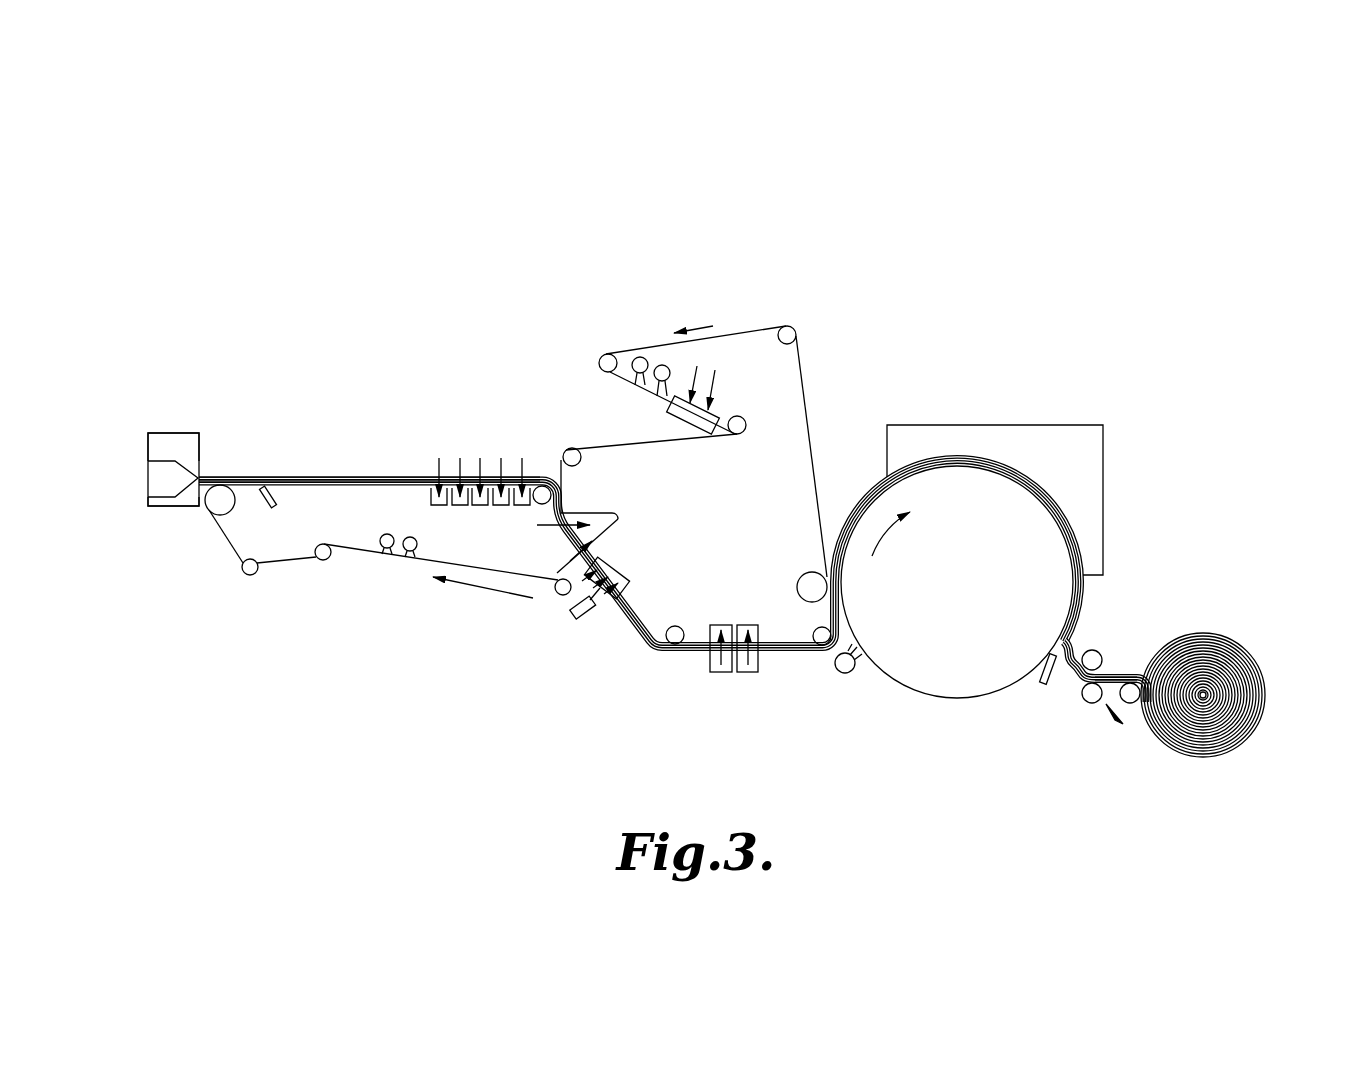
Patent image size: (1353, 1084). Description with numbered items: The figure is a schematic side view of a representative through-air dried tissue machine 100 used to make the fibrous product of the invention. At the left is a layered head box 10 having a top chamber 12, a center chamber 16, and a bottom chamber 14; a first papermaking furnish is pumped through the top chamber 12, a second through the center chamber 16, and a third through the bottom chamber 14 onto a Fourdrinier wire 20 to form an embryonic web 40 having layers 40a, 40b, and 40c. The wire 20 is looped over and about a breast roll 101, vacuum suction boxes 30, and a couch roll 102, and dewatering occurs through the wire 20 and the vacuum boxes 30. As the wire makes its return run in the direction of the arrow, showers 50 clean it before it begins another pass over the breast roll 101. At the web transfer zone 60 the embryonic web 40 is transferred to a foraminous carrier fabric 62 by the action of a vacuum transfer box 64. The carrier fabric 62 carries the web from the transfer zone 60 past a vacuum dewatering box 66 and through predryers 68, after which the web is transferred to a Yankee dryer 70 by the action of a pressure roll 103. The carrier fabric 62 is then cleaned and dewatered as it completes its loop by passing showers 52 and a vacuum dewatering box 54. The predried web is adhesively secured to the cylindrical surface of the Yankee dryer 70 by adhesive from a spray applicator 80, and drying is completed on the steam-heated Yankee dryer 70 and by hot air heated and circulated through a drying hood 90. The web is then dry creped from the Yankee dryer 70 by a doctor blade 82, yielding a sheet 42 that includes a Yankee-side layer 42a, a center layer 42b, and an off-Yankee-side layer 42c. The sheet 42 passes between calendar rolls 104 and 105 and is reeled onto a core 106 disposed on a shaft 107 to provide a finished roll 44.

The layered head box 10 is at (148, 445).
The top chamber 12 is at (165, 443).
The bottom chamber 14 is at (185, 504).
The center chamber 16 is at (148, 486).
The Fourdrinier wire 20 is at (291, 566).
The vacuum suction boxes 30 is at (483, 513).
The embryonic web 40 is at (241, 468).
The layer 40a is at (288, 482).
The layer 40b is at (339, 482).
The layer 40c is at (383, 479).
The sheet 42 is at (1120, 667).
The Yankee-side layer 42a is at (1112, 684).
The center layer 42b is at (1122, 706).
The off-Yankee-side layer 42c is at (1147, 669).
The roll 44 is at (1264, 700).
The showers 50 is at (386, 524).
The showers 52 is at (655, 356).
The vacuum dewatering box 54 is at (713, 362).
The web transfer zone 60 is at (564, 552).
The foraminous carrier fabric 62 is at (807, 394).
The vacuum transfer box 64 is at (618, 519).
The vacuum dewatering box 66 is at (623, 566).
The predryers 68 is at (741, 688).
The Yankee dryer 70 is at (960, 688).
The spray applicator 80 is at (846, 675).
The doctor blade 82 is at (1045, 684).
The drying hood 90 is at (1060, 440).
The tissue machine 100 is at (869, 303).
The breast roll 101 is at (218, 514).
The couch roll 102 is at (541, 485).
The pressure roll 103 is at (808, 580).
The calendar roll 104 is at (1094, 655).
The calendar roll 105 is at (1090, 704).
The core 106 is at (1204, 693).
The shaft 107 is at (1210, 690).